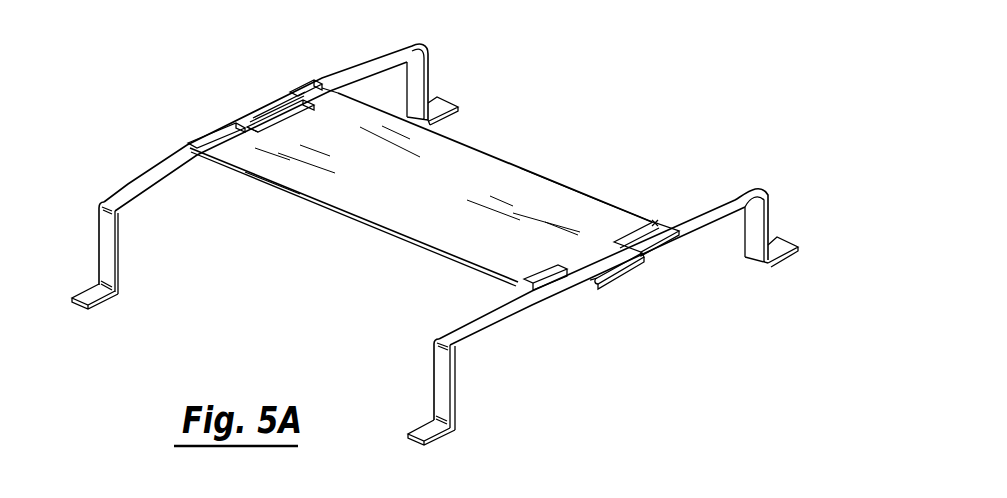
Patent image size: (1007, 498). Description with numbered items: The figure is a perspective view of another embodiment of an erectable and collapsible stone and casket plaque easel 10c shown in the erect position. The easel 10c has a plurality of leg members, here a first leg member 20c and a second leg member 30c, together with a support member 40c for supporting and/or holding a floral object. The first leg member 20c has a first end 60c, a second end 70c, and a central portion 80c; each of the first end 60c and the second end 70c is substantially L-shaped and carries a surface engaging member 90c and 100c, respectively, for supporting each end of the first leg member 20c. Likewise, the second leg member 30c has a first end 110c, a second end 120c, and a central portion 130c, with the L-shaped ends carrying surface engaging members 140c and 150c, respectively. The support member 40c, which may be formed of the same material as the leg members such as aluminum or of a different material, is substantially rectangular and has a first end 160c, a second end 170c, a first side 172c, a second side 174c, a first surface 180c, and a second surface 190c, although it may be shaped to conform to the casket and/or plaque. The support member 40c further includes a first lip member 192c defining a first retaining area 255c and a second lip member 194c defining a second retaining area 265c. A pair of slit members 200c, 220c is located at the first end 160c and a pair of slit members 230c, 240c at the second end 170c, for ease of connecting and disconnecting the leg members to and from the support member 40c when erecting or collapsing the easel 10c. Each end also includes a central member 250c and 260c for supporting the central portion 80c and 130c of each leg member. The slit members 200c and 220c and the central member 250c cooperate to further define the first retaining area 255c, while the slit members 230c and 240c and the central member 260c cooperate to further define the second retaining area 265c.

The stone and casket plaque easel 10c is at (636, 71).
The first leg member 20c is at (130, 185).
The second leg member 30c is at (490, 345).
The support member 40c is at (560, 200).
The first end 60c is at (97, 244).
The second end 70c is at (430, 68).
The central portion 80c is at (259, 108).
The surface engaging member 90c is at (100, 306).
The surface engaging member 100c is at (453, 118).
The first end 110c is at (433, 365).
The second end 120c is at (768, 208).
The central portion 130c is at (638, 262).
The surface engaging member 140c is at (438, 442).
The surface engaging member 150c is at (783, 257).
The first end 160c is at (190, 138).
The second end 170c is at (677, 243).
The first side 172c is at (262, 182).
The second side 174c is at (610, 208).
The first surface 180c is at (560, 187).
The second surface 190c is at (368, 228).
The first lip member 192c is at (343, 87).
The second lip member 194c is at (655, 222).
The slit member 200c is at (207, 132).
The slit member 220c is at (300, 82).
The slit member 230c is at (572, 298).
The slit member 240c is at (670, 250).
The central member 250c is at (246, 114).
The first retaining area 255c is at (250, 102).
The central member 260c is at (617, 278).
The second retaining area 265c is at (598, 282).